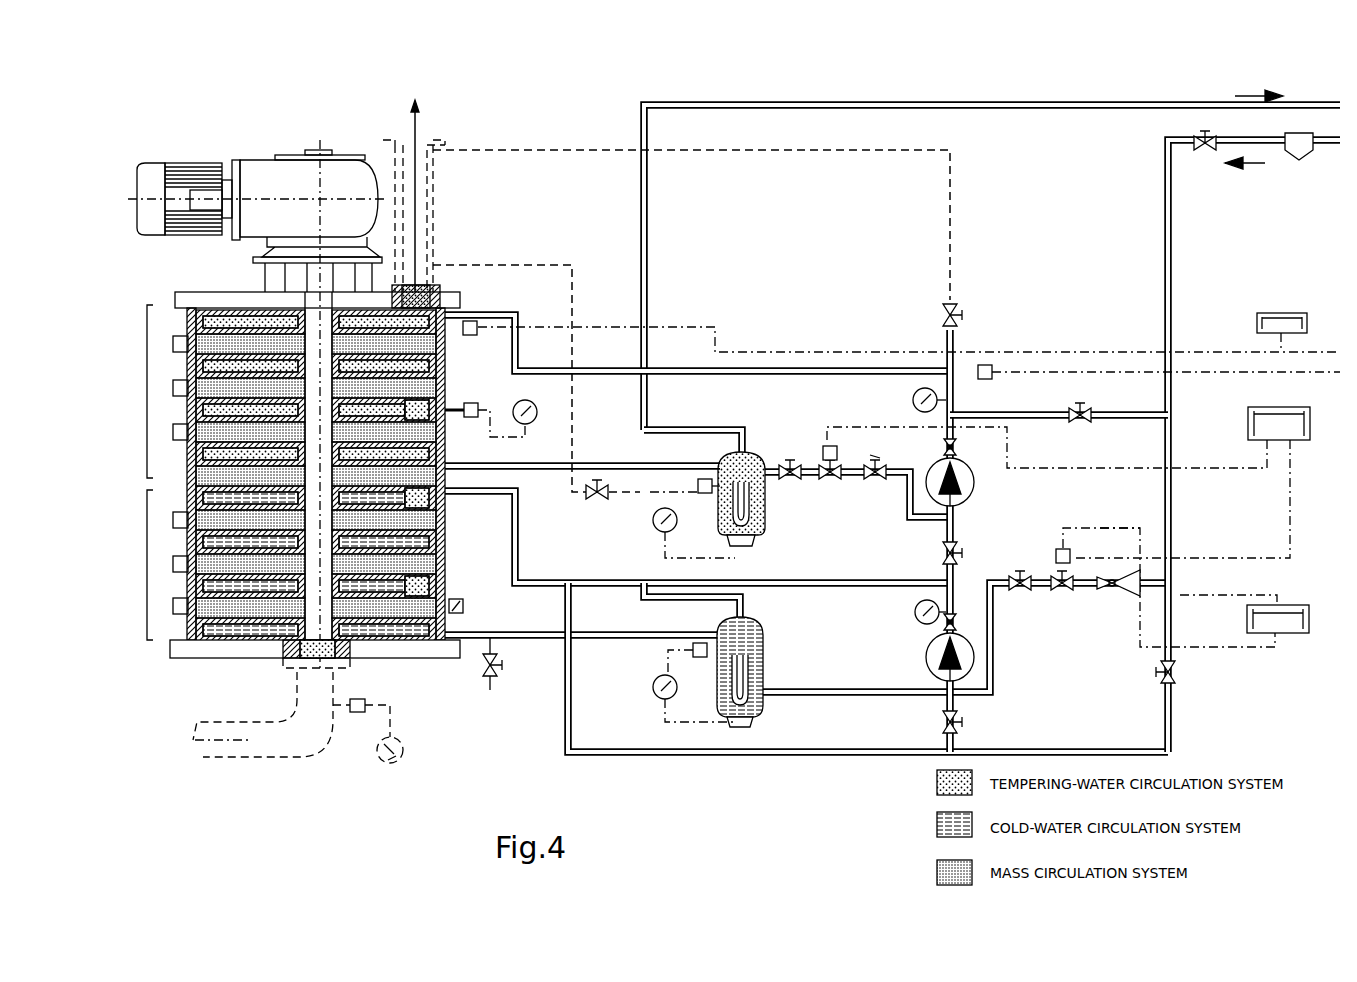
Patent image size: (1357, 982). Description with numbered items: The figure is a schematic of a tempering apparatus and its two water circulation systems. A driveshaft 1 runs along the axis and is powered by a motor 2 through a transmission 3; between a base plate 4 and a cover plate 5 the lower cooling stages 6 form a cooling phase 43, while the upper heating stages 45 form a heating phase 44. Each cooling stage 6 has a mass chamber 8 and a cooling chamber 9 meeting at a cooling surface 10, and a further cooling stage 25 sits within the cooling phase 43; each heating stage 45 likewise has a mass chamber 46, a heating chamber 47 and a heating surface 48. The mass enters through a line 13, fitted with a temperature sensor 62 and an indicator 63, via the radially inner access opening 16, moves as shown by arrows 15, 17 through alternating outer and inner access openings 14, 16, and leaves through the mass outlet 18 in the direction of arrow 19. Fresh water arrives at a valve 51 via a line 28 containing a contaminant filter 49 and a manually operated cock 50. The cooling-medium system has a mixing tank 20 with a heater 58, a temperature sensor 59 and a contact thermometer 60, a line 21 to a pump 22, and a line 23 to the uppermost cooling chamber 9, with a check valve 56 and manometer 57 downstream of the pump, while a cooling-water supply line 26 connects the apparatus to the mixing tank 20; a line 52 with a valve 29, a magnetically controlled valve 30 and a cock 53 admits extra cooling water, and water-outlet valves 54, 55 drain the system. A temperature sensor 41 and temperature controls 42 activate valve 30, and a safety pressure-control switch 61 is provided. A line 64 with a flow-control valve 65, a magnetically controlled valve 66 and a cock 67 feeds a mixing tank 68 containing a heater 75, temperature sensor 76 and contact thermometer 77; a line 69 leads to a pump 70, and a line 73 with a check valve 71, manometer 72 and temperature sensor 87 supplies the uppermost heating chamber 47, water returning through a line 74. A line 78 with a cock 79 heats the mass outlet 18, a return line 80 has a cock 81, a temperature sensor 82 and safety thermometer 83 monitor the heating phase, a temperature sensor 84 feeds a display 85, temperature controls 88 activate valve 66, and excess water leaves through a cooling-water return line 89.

The driveshaft 1 is at (310, 330).
The motor 2 is at (185, 198).
The transmission 3 is at (279, 190).
The base plate 4 is at (228, 650).
The cover plate 5 is at (205, 300).
The cooling stage 6 is at (200, 558).
The mass chamber 8 is at (200, 520).
The cooling chamber 9 is at (200, 628).
The cooling surface 10 is at (476, 566).
The line 13 is at (258, 745).
The access opening 14 is at (476, 590).
The arrow 15 is at (378, 548).
The access opening 16 is at (285, 643).
The arrow 17 is at (340, 648).
The mass outlet 18 is at (438, 100).
The arrow 19 is at (408, 110).
The mixing tank 20 is at (748, 640).
The line 21 is at (842, 697).
The pump 22 is at (967, 665).
The line 23 is at (783, 583).
The cooling stage 25 is at (200, 500).
The cold water supply pipe 26 is at (549, 640).
The line 28 is at (1332, 155).
The valve 29 is at (1120, 588).
The magnetically controlled valve 30 is at (1070, 592).
The temperature sensor 41 is at (450, 498).
The temperature controls 42 is at (1282, 620).
The cooling phase 43 is at (172, 540).
The heating phase 44 is at (174, 405).
The heating stage 45 is at (200, 386).
The mass chamber 46 is at (200, 344).
The heating chamber 47 is at (200, 448).
The heating surface 48 is at (205, 325).
The contaminant filter 49 is at (1301, 148).
The manually operated cock 50 is at (1200, 152).
The valve 51 is at (1083, 404).
The line 52 is at (1122, 628).
The manually operated cock 53 is at (1028, 592).
The water-outlet valve 54 is at (962, 716).
The water-outlet valve 55 is at (490, 690).
The check valve 56 is at (943, 626).
The manometer 57 is at (915, 616).
The heater 58 is at (745, 720).
The temperature sensor 59 is at (692, 652).
The contact thermometer 60 is at (655, 693).
The safety pressure-control switch 61 is at (464, 611).
The temperature sensor 62 is at (367, 704).
The indicator 63 is at (395, 760).
The line 64 is at (906, 477).
The flow-control valve 65 is at (872, 480).
The magnetically controlled valve 66 is at (829, 480).
The manually controlled cock 67 is at (787, 484).
The mixing tank 68 is at (752, 470).
The line 69 is at (855, 520).
The pump 70 is at (968, 490).
The check valve 71 is at (960, 447).
The manometer 72 is at (912, 398).
The line 73 is at (803, 368).
The line 74 is at (544, 469).
The heater 75 is at (700, 523).
The temperature sensor 76 is at (705, 478).
The contact thermometer 77 is at (675, 530).
The line 78 is at (954, 218).
The manually operated cock 79 is at (962, 308).
The return line 80 is at (575, 297).
The manually operated cock 81 is at (596, 478).
The temperature sensor 82 is at (475, 404).
The safety thermometer 83 is at (538, 410).
The temperature sensor 84 is at (474, 335).
The display 85 is at (1282, 320).
The temperature sensor 87 is at (990, 380).
The temperature controls 88 is at (1282, 420).
The cooling-water return line 89 is at (1054, 110).